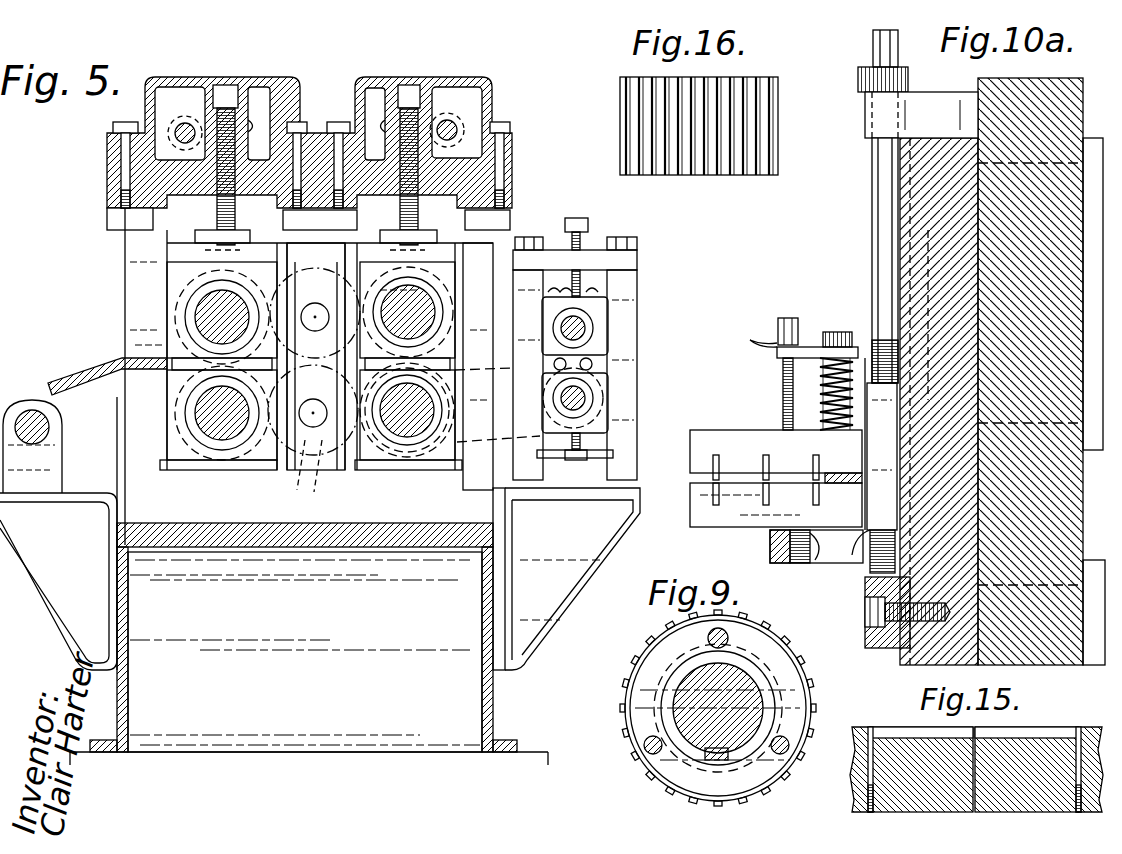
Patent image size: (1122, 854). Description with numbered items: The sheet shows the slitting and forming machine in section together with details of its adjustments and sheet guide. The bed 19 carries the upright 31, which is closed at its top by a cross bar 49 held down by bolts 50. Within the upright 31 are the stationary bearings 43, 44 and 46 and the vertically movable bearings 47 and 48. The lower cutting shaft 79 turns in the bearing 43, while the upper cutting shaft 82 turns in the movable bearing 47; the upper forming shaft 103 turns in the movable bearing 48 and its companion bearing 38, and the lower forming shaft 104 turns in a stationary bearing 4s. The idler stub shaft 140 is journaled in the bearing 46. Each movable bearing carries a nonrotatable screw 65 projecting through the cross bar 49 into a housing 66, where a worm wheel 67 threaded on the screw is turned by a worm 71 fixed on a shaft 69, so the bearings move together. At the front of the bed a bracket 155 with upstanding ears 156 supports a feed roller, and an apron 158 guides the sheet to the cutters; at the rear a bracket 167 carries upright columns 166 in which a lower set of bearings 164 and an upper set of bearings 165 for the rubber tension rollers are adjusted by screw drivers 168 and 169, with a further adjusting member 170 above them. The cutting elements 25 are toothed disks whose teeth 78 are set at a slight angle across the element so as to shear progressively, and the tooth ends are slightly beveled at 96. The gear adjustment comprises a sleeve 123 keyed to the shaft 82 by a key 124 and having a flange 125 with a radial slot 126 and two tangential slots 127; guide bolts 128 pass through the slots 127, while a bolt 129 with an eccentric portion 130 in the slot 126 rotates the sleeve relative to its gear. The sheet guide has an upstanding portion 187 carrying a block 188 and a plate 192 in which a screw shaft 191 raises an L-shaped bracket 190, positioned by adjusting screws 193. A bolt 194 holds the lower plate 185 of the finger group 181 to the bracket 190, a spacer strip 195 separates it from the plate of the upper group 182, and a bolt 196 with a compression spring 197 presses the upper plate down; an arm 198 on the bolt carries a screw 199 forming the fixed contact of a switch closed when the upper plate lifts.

In FIG. 5, the shaft 69 is at (172, 130).
In FIG. 5, the worm wheel 67 is at (258, 118).
In FIG. 5, the housing 66 is at (186, 122).
In FIG. 5, the worm 71 is at (195, 122).
In FIG. 5, the screw 65 is at (218, 231).
In FIG. 5, the bolts 50 is at (113, 127).
In FIG. 5, the cross bar 49 is at (316, 130).
In FIG. 5, the upright 31 is at (130, 266).
In FIG. 5, the vertically movable bearing 48 is at (450, 260).
In FIG. 5, the vertically movable bearing 47 is at (178, 278).
In FIG. 5, the shaft 82 is at (205, 313).
In FIG. 9, the shaft 82 is at (690, 700).
In FIG. 5, the stationary bearing 43 is at (175, 445).
In FIG. 5, the shaft 79 is at (200, 408).
In FIG. 5, the apron 158 is at (93, 376).
In FIG. 5, the ears 156 is at (56, 470).
In FIG. 5, the bracket 155 is at (61, 545).
In FIG. 5, the bed 19 is at (130, 598).
In FIG. 5, the bracket 167 is at (560, 590).
In FIG. 5, the stub shaft 140 is at (303, 328).
In FIG. 5, the stationary bearing 46 is at (313, 410).
In FIG. 5, the vertically slidable bearing 38 is at (310, 471).
In FIG. 5, the stationary bearing 44 is at (274, 471).
In FIG. 5, the shaft 103 is at (397, 294).
In FIG. 5, the shaft 104 is at (406, 418).
In FIG. 5, the flange 4s is at (442, 458).
In FIG. 5, the upright columns 166 is at (622, 262).
In FIG. 5, the screw driver 169 is at (590, 233).
In FIG. 5, the adjusting screw 170 is at (600, 292).
In FIG. 5, the upper set of bearings 165 is at (592, 335).
In FIG. 5, the lower set of bearings 164 is at (592, 410).
In FIG. 5, the screw driver 168 is at (582, 447).
In FIG. 16, the teeth 78 is at (700, 172).
In FIG. 15, the teeth 78 is at (930, 730).
In FIG. 10A, the upstanding portion 187 is at (927, 202).
In FIG. 10A, the plate 192 is at (947, 92).
In FIG. 10A, the screw shaft 191 is at (877, 188).
In FIG. 10A, the bolt 196 is at (842, 332).
In FIG. 10A, the arm 198 is at (812, 347).
In FIG. 10A, the screw 199 is at (782, 372).
In FIG. 10A, the compression spring 197 is at (825, 387).
In FIG. 10A, the group of fingers 182 is at (763, 457).
In FIG. 10A, the group of fingers 181 is at (735, 492).
In FIG. 10A, the plate 185 is at (745, 512).
In FIG. 10A, the bolt 194 is at (772, 545).
In FIG. 10A, the spacer strip 195 is at (862, 535).
In FIG. 10A, the adjusting screws 193 is at (870, 600).
In FIG. 10A, the L-shaped bracket 190 is at (866, 598).
In FIG. 10A, the block 188 is at (888, 650).
In FIG. 9, the flange 125 is at (652, 672).
In FIG. 9, the sleeve 123 is at (658, 715).
In FIG. 9, the slot 126 is at (725, 632).
In FIG. 9, the bolt 129 is at (707, 636).
In FIG. 9, the eccentric portion 130 is at (680, 645).
In FIG. 9, the bolts 128 is at (647, 751).
In FIG. 9, the slots 127 is at (788, 740).
In FIG. 9, the key 124 is at (707, 756).
In FIG. 15, the cutting elements 25 is at (917, 780).
In FIG. 15, the beveled tooth ends 96 is at (878, 736).